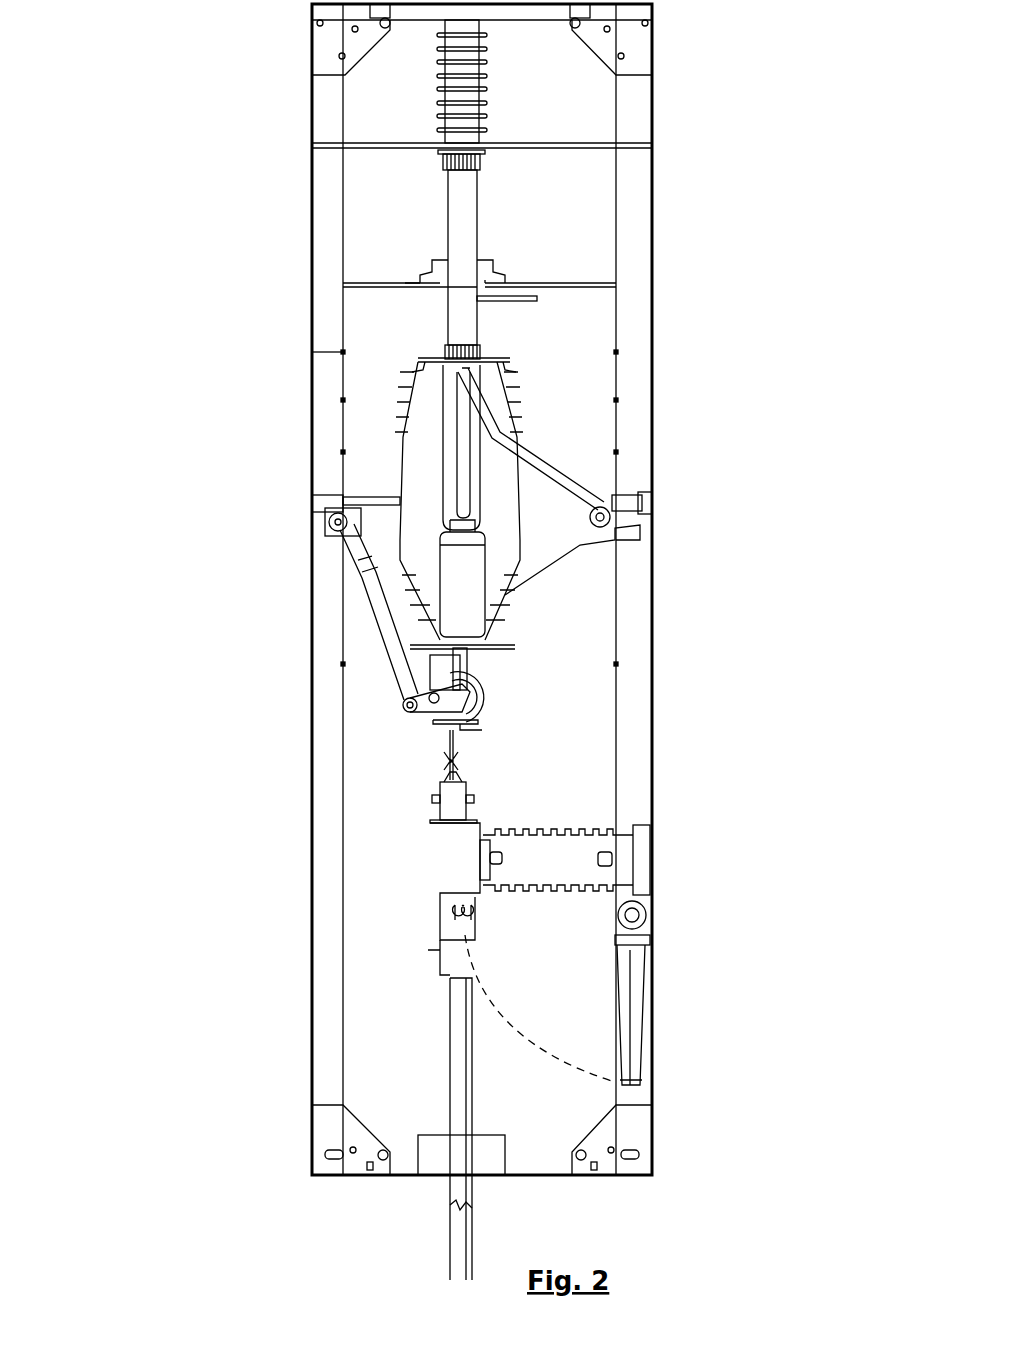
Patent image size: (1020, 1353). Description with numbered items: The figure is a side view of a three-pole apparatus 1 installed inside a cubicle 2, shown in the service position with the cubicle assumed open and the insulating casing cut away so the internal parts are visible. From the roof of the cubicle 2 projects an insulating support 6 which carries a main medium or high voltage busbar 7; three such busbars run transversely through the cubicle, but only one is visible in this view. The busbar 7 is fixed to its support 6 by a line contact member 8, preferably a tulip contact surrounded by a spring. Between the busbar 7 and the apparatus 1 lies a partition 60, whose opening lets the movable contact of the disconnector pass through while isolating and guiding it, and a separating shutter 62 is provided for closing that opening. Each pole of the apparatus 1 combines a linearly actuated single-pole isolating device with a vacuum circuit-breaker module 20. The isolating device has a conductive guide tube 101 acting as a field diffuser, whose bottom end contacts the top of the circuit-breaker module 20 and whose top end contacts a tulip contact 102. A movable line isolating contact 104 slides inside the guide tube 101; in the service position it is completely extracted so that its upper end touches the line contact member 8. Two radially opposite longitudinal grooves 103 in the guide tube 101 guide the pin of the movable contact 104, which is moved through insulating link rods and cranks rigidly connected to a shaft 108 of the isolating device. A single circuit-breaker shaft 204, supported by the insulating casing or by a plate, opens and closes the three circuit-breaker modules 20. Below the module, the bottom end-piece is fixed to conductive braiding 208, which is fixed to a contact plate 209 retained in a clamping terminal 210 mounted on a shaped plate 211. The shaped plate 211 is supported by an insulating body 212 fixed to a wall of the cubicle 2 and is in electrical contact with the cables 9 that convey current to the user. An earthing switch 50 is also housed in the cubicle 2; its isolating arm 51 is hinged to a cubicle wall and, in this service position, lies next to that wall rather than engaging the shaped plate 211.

The three-pole apparatus 1 is at (546, 424).
The cubicle 2 is at (228, 102).
The insulating support 6 is at (487, 62).
The main busbar 7 is at (580, 148).
The line contact member 8 is at (437, 158).
The cables 9 is at (448, 1067).
The vacuum circuit-breaker module 20 is at (480, 595).
The earthing switch 50 is at (662, 993).
The isolating arm 51 is at (638, 1020).
The partition 60 is at (386, 277).
The separating shutter 62 is at (513, 301).
The guide tube 101 is at (443, 468).
The tulip contact 102 is at (445, 350).
The longitudinal groove 103 is at (505, 478).
The movable line isolating contact 104 is at (482, 213).
The shaft of the single-pole isolating device 108 is at (612, 518).
The circuit-breaker shaft 204 is at (338, 522).
The conductive braiding 208 is at (492, 704).
The contact plate 209 is at (458, 735).
The clamping terminal 210 is at (470, 797).
The shaped plate 211 is at (470, 832).
The insulating body 212 is at (650, 940).